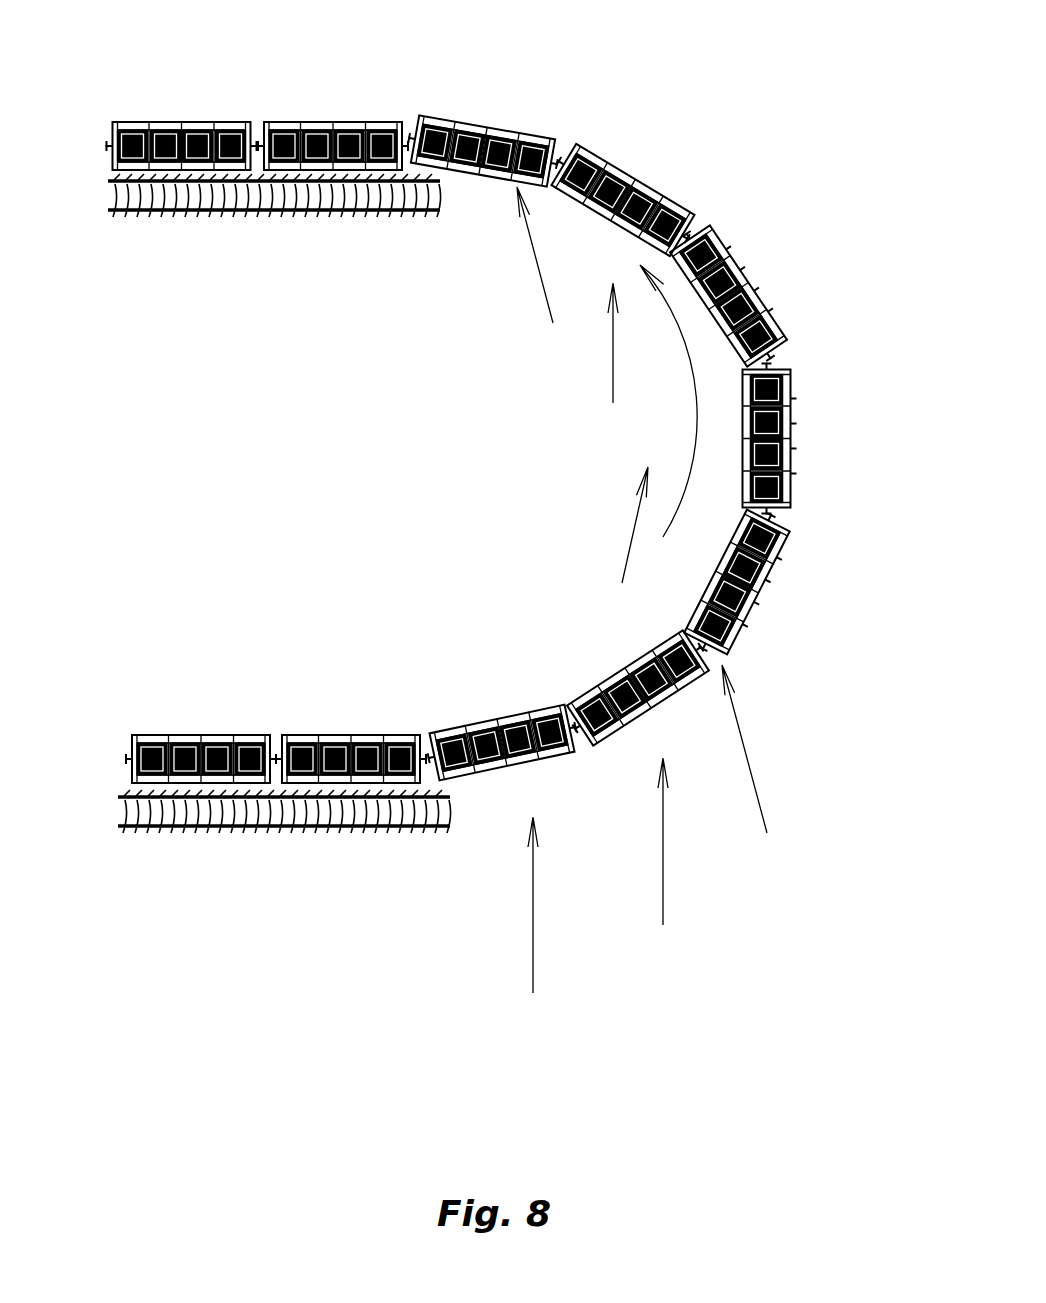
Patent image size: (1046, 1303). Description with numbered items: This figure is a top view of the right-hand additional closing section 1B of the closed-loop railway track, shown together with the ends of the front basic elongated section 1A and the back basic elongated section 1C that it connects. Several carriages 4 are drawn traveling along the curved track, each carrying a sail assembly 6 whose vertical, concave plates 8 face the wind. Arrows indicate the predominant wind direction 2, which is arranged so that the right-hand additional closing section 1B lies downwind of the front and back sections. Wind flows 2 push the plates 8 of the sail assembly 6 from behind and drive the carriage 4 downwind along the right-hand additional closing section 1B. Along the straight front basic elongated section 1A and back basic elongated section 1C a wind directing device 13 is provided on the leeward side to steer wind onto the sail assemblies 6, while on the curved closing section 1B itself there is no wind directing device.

The front basic elongated section 1A is at (220, 737).
The right-hand additional closing section 1B is at (688, 202).
The back basic elongated section 1C is at (205, 122).
The predominant wind direction 2 is at (608, 373).
The carriage 4 is at (518, 125).
The sail assembly 6 is at (788, 408).
The plates 8 is at (770, 565).
The wind directing device 13 is at (188, 198).